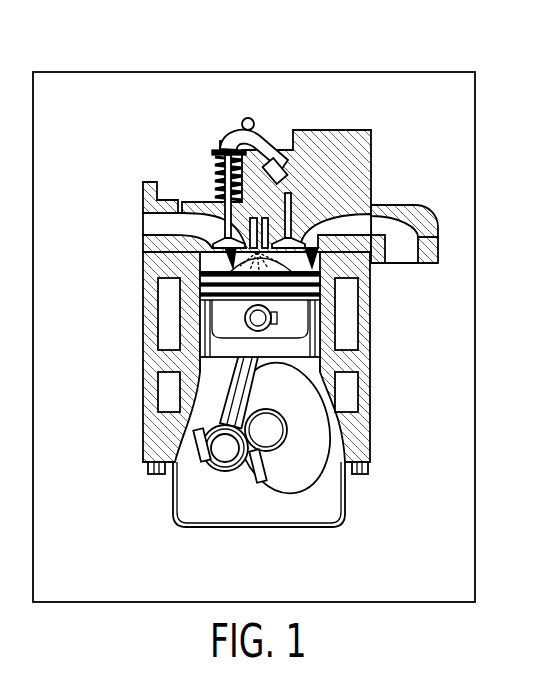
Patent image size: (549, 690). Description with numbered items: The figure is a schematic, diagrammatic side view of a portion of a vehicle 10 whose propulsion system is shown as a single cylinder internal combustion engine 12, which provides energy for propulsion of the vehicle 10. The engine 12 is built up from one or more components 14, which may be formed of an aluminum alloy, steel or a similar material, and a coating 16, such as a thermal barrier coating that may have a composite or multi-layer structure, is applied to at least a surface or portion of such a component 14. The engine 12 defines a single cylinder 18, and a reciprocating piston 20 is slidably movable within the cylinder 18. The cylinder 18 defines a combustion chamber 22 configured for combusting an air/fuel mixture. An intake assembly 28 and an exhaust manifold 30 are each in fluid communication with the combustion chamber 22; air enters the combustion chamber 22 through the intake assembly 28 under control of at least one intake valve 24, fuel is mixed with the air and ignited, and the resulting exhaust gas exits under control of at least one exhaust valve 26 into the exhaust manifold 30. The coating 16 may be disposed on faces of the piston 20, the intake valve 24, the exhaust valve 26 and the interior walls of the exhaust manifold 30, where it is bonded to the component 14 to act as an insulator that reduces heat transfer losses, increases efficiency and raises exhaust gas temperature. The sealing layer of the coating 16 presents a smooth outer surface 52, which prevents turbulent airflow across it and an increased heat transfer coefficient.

The vehicle 10 is at (165, 72).
The internal combustion engine 12 is at (147, 157).
The component 14 is at (165, 239).
The coating 16 is at (190, 282).
The cylinder 18 is at (320, 340).
The piston 20 is at (200, 322).
The combustion chamber 22 is at (320, 270).
The intake valve 24 is at (205, 250).
The exhaust valve 26 is at (303, 245).
The intake assembly 28 is at (143, 200).
The exhaust manifold 30 is at (418, 212).
The outer surface 52 is at (320, 252).